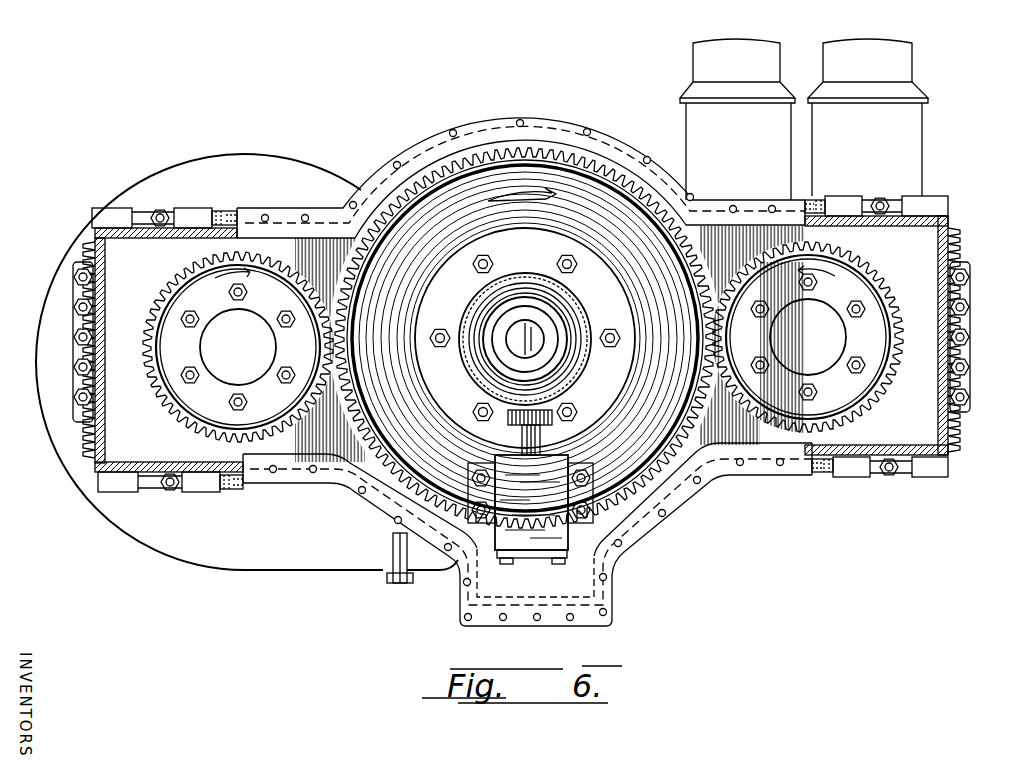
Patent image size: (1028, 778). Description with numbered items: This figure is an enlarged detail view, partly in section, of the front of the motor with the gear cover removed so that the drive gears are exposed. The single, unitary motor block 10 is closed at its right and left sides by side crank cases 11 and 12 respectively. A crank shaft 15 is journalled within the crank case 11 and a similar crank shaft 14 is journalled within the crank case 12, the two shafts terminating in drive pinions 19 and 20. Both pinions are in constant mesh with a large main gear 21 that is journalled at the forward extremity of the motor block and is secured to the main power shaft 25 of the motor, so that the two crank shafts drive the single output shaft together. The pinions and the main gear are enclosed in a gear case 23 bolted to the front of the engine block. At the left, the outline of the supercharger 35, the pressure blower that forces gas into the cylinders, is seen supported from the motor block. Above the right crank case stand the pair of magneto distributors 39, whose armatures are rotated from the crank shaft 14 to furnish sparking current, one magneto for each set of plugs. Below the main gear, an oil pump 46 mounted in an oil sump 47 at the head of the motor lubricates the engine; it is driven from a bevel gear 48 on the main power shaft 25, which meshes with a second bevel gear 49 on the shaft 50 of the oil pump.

The motor block 10 is at (558, 135).
The side crank case 11 is at (118, 258).
The side crank case 12 is at (923, 300).
The crank shaft 14 is at (833, 343).
The crank shaft 15 is at (233, 353).
The drive pinion 19 is at (150, 297).
The drive pinion 20 is at (867, 300).
The main gear 21 is at (582, 183).
The gear case 23 is at (415, 165).
The main power shaft 25 is at (527, 340).
The supercharger 35 is at (127, 512).
The magneto distributors 39 is at (823, 54).
The oil pump 46 is at (523, 530).
The oil sump 47 is at (517, 597).
The bevel gear 48 is at (567, 313).
The second bevel gear 49 is at (507, 410).
The shaft 50 is at (517, 437).